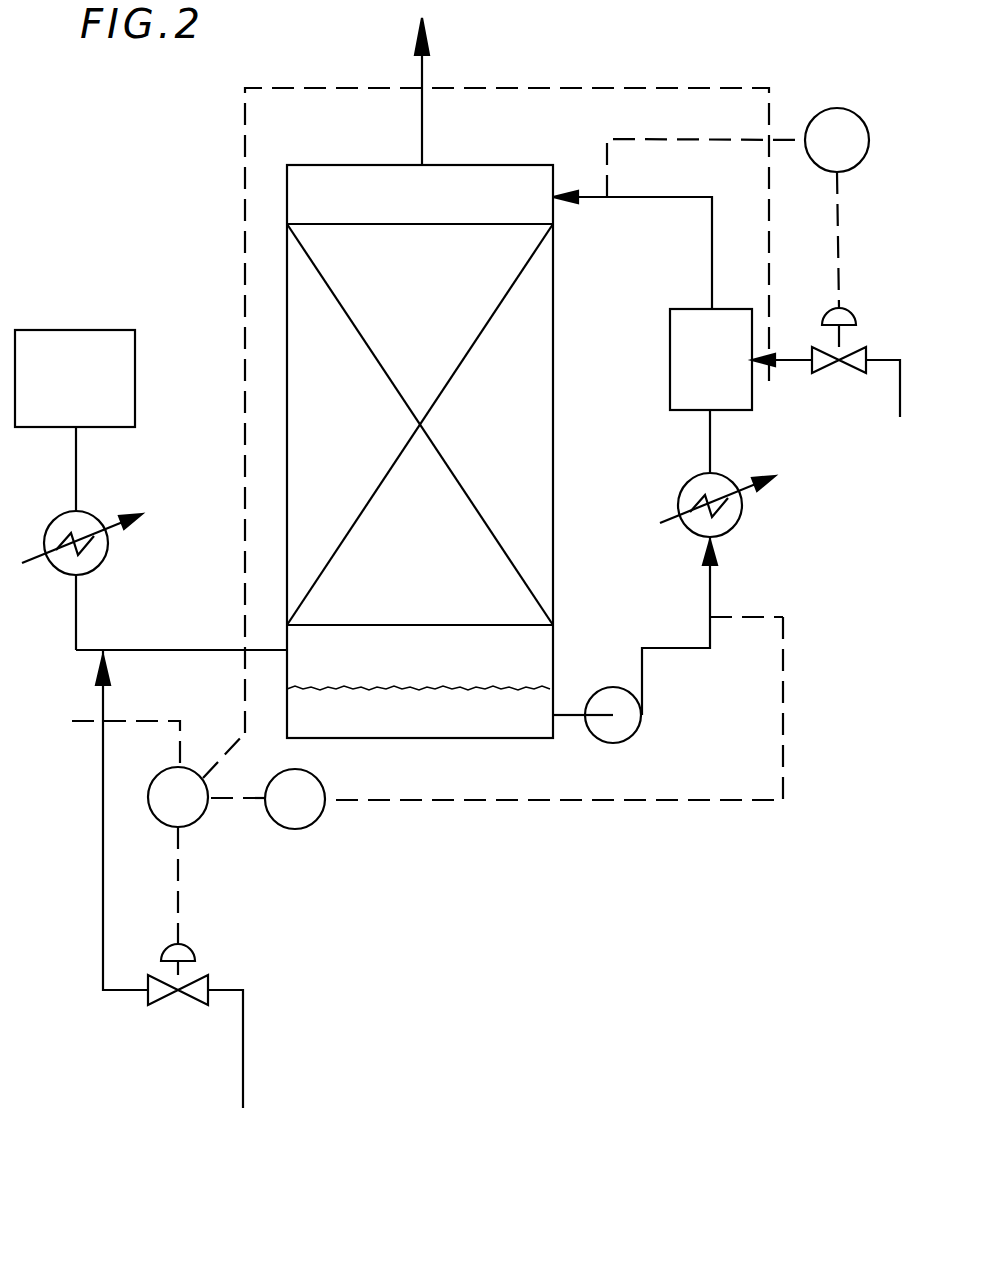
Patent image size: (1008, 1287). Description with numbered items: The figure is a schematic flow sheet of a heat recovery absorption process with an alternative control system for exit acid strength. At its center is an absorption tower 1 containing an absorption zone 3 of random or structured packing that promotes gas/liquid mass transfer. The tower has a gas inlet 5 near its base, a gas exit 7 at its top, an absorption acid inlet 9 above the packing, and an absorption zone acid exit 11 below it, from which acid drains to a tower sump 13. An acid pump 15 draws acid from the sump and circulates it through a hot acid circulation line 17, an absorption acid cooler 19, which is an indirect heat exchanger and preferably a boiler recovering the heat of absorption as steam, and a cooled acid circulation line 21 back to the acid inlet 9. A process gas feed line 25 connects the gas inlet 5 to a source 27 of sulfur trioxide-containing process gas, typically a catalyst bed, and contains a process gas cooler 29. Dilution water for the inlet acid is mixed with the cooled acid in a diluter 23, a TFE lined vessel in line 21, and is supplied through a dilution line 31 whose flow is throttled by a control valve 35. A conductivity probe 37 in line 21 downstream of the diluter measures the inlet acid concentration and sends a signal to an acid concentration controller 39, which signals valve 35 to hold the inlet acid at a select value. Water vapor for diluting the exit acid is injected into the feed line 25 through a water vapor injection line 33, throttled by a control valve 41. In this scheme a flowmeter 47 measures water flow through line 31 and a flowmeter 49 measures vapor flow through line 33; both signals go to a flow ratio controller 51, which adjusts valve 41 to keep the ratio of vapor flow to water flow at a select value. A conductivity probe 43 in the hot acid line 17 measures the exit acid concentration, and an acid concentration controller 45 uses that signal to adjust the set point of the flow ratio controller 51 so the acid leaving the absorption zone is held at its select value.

The absorption tower 1 is at (555, 405).
The absorption zone 3 is at (303, 362).
The gas inlet 5 is at (283, 652).
The gas exit 7 is at (424, 165).
The absorption acid inlet 9 is at (562, 195).
The absorption zone acid exit 11 is at (535, 660).
The tower sump 13 is at (505, 728).
The acid pump 15 is at (637, 733).
The hot acid circulation line 17 is at (709, 587).
The absorption acid cooler 19 is at (735, 527).
The cooled acid circulation line 21 is at (652, 200).
The diluter 23 is at (677, 390).
The process gas feed line 25 is at (160, 650).
The source of sulfur trioxide-containing process gas 27 is at (95, 402).
The process gas cooler 29 is at (100, 523).
The dilution line 31 is at (890, 409).
The water vapor injection line 33 is at (102, 897).
The control valve 35 is at (848, 310).
The conductivity probe 37 is at (607, 197).
The acid concentration controller 39 is at (848, 109).
The control valve 41 is at (198, 1002).
The conductivity probe 43 is at (715, 617).
The acid concentration controller 45 is at (323, 813).
The flowmeter 47 is at (770, 363).
The flowmeter 49 is at (102, 722).
The flow ratio controller 51 is at (205, 817).